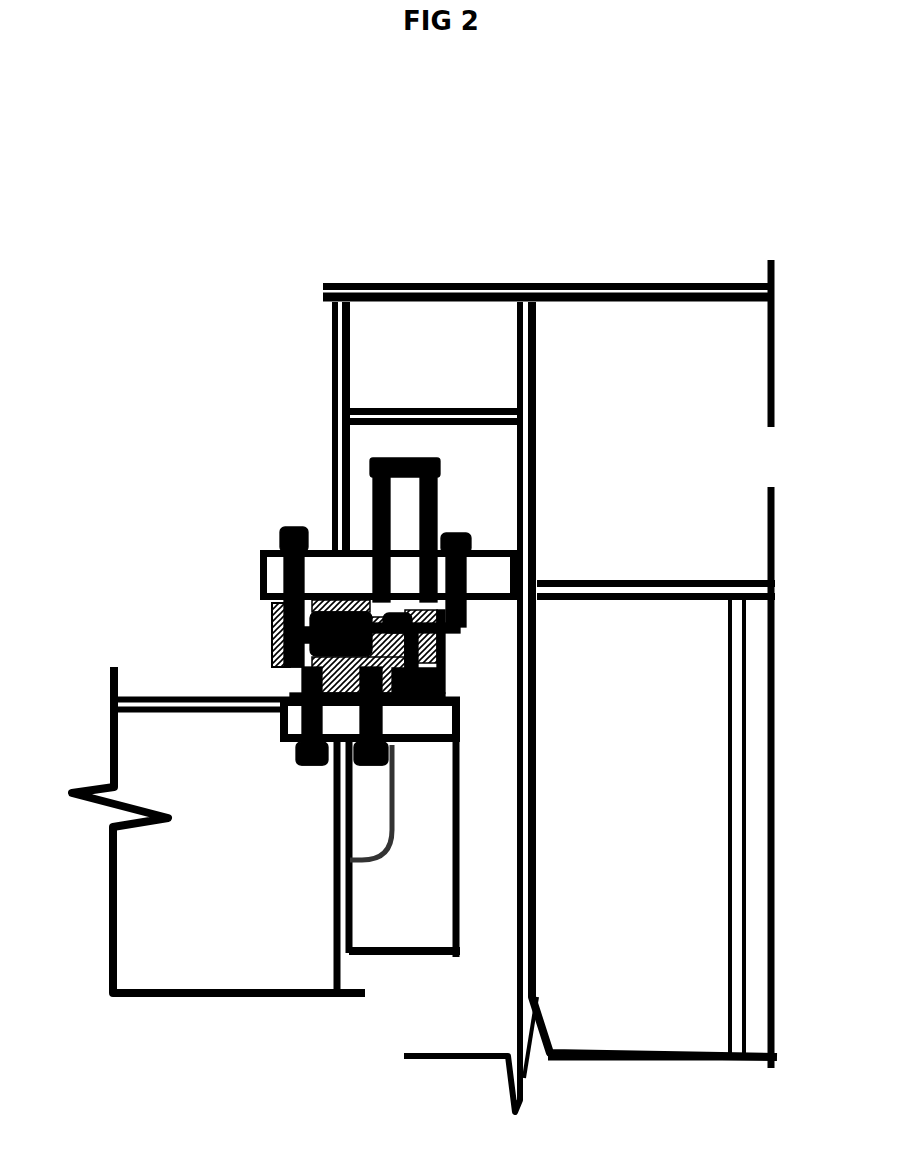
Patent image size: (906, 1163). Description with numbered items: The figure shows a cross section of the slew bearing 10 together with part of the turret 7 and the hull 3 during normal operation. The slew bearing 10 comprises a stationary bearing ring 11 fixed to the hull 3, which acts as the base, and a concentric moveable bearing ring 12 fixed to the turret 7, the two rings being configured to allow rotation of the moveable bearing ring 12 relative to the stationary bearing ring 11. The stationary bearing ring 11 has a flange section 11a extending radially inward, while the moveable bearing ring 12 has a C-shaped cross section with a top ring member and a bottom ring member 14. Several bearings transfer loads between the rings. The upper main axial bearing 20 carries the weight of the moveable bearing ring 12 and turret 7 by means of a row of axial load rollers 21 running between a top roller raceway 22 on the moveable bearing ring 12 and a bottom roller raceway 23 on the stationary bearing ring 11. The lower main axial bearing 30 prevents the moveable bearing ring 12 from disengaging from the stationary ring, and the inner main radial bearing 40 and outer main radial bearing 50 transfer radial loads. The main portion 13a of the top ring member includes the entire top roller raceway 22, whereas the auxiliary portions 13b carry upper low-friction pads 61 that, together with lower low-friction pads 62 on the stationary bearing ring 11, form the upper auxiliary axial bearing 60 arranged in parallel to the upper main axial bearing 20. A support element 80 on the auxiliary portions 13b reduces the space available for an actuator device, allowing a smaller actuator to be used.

The hull 3 is at (138, 948).
The turret 7 is at (627, 1027).
The slew bearing 10 is at (183, 542).
The stationary bearing ring 11 is at (340, 702).
The flange section 11a is at (387, 727).
The moveable bearing ring 12 is at (262, 614).
The main portion 13a is at (268, 608).
The auxiliary portions 13b is at (444, 642).
The bottom ring member 14 is at (458, 700).
The upper main axial bearing 20 is at (333, 605).
The axial load rollers 21 is at (275, 636).
The top roller raceway 22 is at (283, 566).
The bottom roller raceway 23 is at (285, 683).
The lower main axial bearing 30 is at (390, 702).
The inner main radial bearing 40 is at (444, 666).
The outer main radial bearing 50 is at (275, 650).
The upper auxiliary axial bearing 60 is at (400, 625).
The upper low-friction pads 61 is at (385, 618).
The lower low-friction pads 62 is at (410, 655).
The support element 80 is at (395, 466).